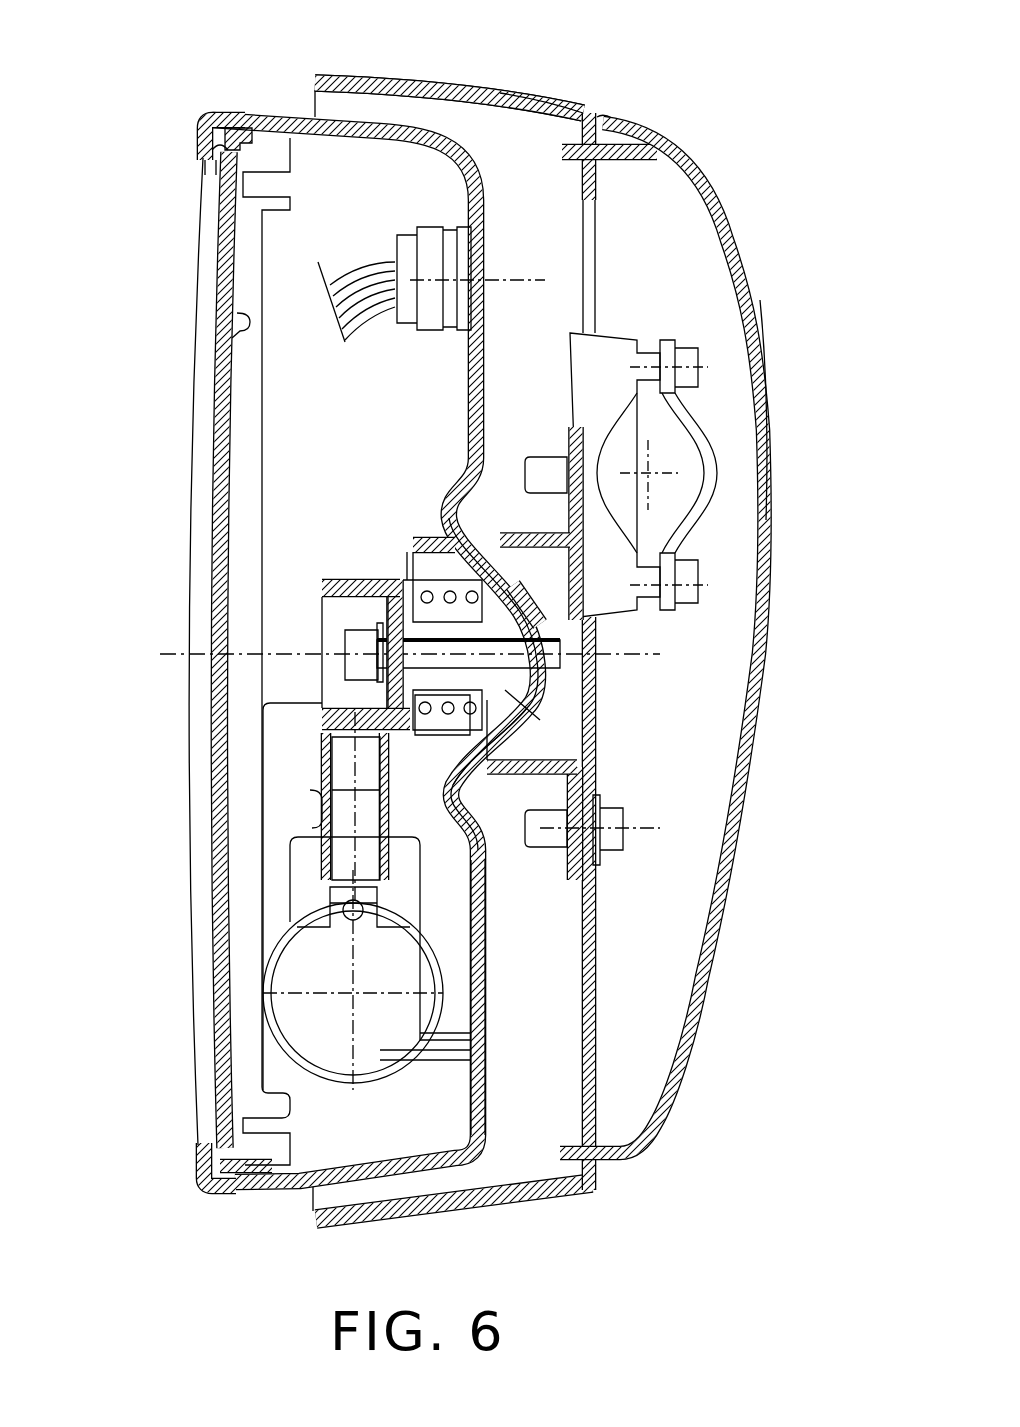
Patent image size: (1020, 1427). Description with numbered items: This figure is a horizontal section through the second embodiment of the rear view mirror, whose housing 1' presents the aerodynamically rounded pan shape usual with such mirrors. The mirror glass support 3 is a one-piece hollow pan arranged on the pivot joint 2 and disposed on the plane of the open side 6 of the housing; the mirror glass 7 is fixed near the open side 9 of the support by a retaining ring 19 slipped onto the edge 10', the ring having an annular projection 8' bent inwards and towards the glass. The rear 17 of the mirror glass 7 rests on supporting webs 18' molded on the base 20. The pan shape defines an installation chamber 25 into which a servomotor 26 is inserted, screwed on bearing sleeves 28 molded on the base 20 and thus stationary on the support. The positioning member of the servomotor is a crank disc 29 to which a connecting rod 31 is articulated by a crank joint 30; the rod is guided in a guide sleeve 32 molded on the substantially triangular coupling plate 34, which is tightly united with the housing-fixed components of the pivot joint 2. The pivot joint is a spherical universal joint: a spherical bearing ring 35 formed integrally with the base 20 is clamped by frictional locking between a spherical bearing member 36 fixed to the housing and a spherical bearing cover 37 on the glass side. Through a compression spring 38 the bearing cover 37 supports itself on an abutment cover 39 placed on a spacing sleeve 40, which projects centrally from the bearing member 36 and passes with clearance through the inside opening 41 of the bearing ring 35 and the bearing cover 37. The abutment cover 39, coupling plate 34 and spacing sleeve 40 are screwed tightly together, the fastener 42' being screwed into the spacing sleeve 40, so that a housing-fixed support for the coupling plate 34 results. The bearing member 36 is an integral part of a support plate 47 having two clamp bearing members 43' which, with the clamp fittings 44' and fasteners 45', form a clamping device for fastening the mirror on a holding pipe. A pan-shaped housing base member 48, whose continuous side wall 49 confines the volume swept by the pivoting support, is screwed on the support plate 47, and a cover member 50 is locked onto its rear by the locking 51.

The housing 1' is at (673, 612).
The pivot joint 2 is at (430, 522).
The mirror glass support 3 is at (489, 1078).
The open side 6 is at (305, 1195).
The mirror glass 7 is at (218, 589).
The annular projection 8' is at (172, 176).
The open side 9 is at (240, 448).
The edge 10' is at (255, 84).
The rear 17 is at (237, 313).
The supporting webs 18' is at (196, 651).
The retaining ring 19 is at (230, 127).
The base 20 is at (486, 965).
The installation chamber 25 is at (322, 400).
The servomotor 26 is at (305, 900).
The bearing sleeves 28 is at (445, 830).
The crank disc 29 is at (347, 1050).
The crank joint 30 is at (350, 918).
The connecting rod 31 is at (345, 843).
The guide sleeve 32 is at (322, 762).
The coupling plate 34 is at (405, 578).
The spherical bearing ring 35 is at (462, 765).
The spherical bearing member 36 is at (520, 730).
The spherical bearing cover 37 is at (522, 606).
The compression spring 38 is at (432, 718).
The abutment cover 39 is at (435, 700).
The spacing sleeve 40 is at (428, 583).
The inside opening 41 is at (548, 718).
The fastener 42' is at (410, 638).
The clamp bearing members 43' is at (615, 449).
The clamp fittings 44' is at (676, 472).
The fasteners 45' is at (682, 469).
The support plate 47 is at (578, 455).
The housing base member 48 is at (554, 98).
The side wall 49 is at (467, 88).
The cover member 50 is at (766, 340).
The locking 51 is at (612, 120).